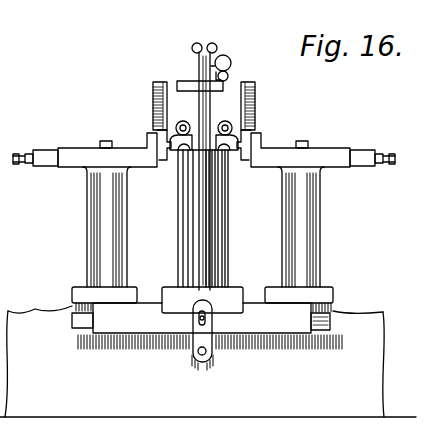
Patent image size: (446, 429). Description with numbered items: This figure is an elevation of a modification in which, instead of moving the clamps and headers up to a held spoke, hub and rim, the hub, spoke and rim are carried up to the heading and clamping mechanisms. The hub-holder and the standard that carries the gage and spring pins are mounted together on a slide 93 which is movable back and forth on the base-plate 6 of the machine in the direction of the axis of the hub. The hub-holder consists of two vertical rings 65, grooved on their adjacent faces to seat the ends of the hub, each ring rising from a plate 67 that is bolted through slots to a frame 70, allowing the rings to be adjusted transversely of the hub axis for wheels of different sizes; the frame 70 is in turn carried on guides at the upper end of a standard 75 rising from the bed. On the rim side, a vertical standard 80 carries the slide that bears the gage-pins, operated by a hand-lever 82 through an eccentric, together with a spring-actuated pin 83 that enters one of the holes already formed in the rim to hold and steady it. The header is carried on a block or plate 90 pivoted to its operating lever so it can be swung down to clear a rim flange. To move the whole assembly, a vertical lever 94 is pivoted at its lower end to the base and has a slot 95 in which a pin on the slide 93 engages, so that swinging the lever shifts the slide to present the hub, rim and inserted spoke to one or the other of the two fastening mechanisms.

The base-plate 6 is at (208, 360).
The vertical rings 65 is at (155, 93).
The plate 67 is at (164, 160).
The frame 70 is at (68, 152).
The standard 75 is at (87, 230).
The vertical standard 80 is at (225, 258).
The hand-lever 82 is at (214, 45).
The spring-actuated pin 83 is at (231, 64).
The block or plate 90 is at (176, 126).
The slide 93 is at (201, 318).
The vertical lever 94 is at (190, 239).
The slot 95 is at (198, 322).